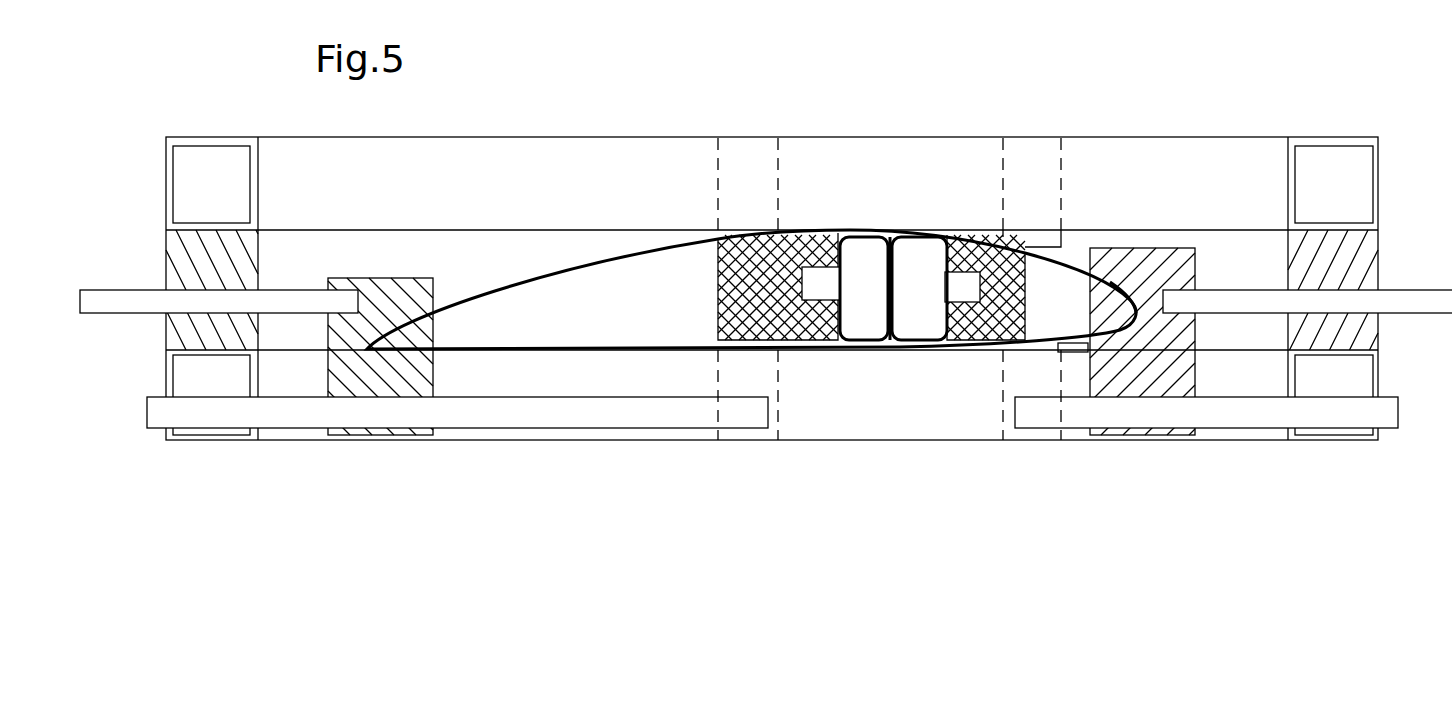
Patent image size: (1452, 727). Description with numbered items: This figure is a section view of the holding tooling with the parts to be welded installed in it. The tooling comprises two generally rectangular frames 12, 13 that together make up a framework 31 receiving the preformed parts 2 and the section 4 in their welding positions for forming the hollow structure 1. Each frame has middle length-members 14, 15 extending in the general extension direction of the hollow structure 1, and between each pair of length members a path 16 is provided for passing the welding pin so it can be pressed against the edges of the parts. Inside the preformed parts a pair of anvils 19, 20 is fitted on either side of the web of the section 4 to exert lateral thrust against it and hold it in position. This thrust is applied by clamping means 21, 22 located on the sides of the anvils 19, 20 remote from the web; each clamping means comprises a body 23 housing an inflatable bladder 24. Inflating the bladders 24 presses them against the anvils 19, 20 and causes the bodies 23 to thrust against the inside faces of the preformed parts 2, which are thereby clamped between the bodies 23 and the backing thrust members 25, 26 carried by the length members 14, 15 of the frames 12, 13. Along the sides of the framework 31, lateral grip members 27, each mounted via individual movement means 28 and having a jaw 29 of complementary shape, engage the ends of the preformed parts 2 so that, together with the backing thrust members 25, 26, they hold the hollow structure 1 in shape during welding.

The hollow structure 1 is at (594, 264).
The preformed part 2 is at (1136, 313).
The section 4 is at (897, 267).
The frame 12 is at (480, 137).
The frame 13 is at (512, 440).
The middle length-member 14 is at (718, 160).
The middle length-member 15 is at (1062, 152).
The path 16 is at (875, 168).
The anvil 19 is at (866, 236).
The anvil 20 is at (915, 236).
The clamping means 21 is at (712, 313).
The clamping means 22 is at (1036, 320).
The body 23 is at (718, 270).
The inflatable bladder 24 is at (815, 300).
The backing thrust member 25 is at (1062, 235).
The backing thrust member 26 is at (718, 237).
The lateral grip member 27 is at (328, 383).
The individual movement means 28 is at (132, 290).
The jaw 29 is at (390, 327).
The framework 31 is at (628, 492).